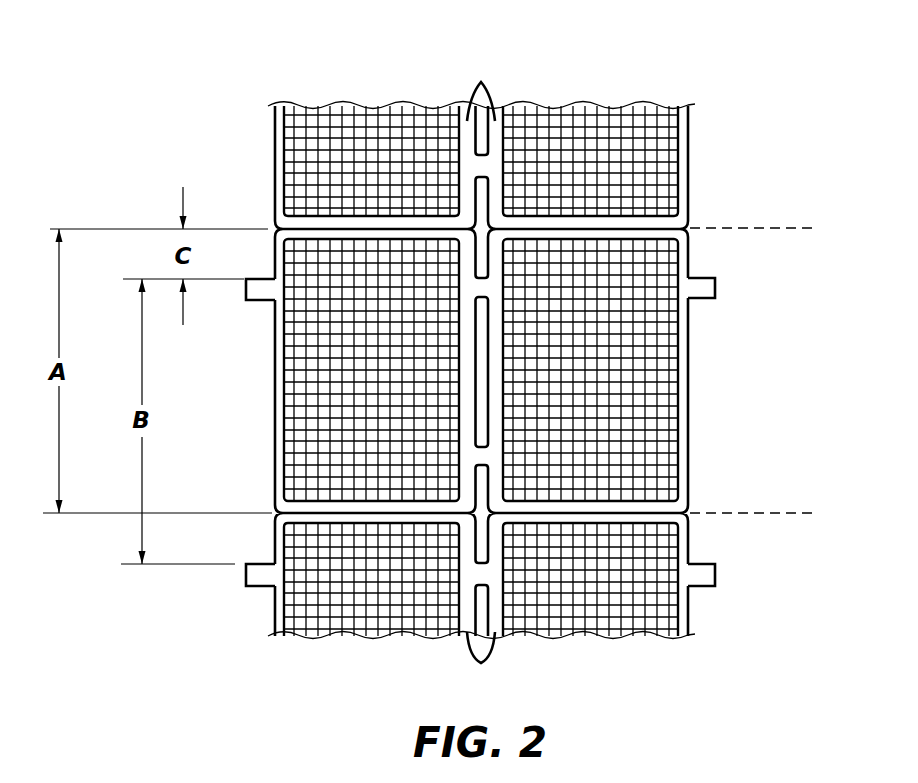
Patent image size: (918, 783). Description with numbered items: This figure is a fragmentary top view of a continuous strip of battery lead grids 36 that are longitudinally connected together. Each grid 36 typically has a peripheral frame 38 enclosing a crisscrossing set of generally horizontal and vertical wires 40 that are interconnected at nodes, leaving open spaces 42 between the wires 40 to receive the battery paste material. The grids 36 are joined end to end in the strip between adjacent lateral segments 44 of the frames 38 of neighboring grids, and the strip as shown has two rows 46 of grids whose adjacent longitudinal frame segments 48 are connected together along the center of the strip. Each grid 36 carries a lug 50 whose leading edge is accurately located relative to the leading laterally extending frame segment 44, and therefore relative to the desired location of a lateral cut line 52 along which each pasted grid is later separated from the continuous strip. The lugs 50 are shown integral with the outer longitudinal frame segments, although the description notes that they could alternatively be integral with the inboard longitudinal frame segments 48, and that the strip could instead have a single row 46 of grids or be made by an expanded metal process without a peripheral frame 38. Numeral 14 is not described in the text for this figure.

The panel 14 is at (266, 92).
The grid 36 is at (633, 640).
The peripheral frame 38 is at (271, 607).
The wires 40 is at (322, 342).
The open spaces 42 is at (671, 88).
The lateral segments 44 is at (647, 232).
The rows 46 is at (592, 96).
The longitudinal frame segments 48 is at (688, 338).
The lug 50 is at (243, 576).
The lateral cut line 52 is at (822, 495).